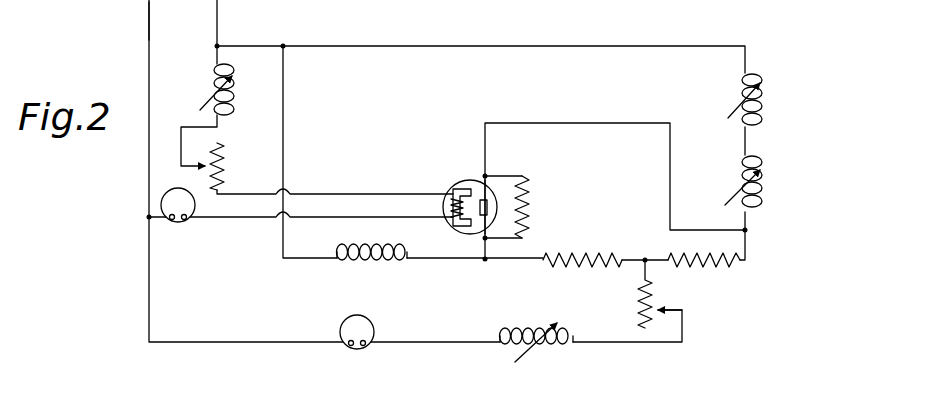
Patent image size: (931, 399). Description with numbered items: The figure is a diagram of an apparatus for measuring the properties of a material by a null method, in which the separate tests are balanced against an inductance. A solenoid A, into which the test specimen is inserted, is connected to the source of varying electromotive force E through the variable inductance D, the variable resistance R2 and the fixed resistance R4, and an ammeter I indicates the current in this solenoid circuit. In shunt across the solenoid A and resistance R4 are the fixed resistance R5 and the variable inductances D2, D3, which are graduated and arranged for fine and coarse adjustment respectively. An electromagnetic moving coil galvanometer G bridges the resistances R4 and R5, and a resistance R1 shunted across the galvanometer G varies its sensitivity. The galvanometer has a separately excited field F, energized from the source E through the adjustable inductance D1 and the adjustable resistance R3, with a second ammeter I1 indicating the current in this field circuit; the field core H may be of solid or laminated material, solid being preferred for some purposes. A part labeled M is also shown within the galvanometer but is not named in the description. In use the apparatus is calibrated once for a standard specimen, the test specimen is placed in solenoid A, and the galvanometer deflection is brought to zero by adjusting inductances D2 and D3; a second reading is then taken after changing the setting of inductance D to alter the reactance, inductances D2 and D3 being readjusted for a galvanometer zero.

The source of varying electromotive force E is at (167, 21).
The adjustable inductance D1 is at (223, 104).
The adjustable resistance R3 is at (224, 165).
The ammeter I1 is at (183, 223).
The solenoid A is at (366, 268).
The ammeter I is at (372, 327).
The field winding F is at (456, 233).
The field core H is at (462, 190).
The movable armature M is at (488, 208).
The galvanometer G is at (492, 186).
The resistance R1 is at (528, 204).
The fixed resistance R4 is at (588, 257).
The fixed resistance R5 is at (737, 263).
The variable resistance R2 is at (639, 297).
The variable inductance D is at (549, 350).
The variable inductance D2 is at (737, 88).
The variable inductance D3 is at (737, 184).